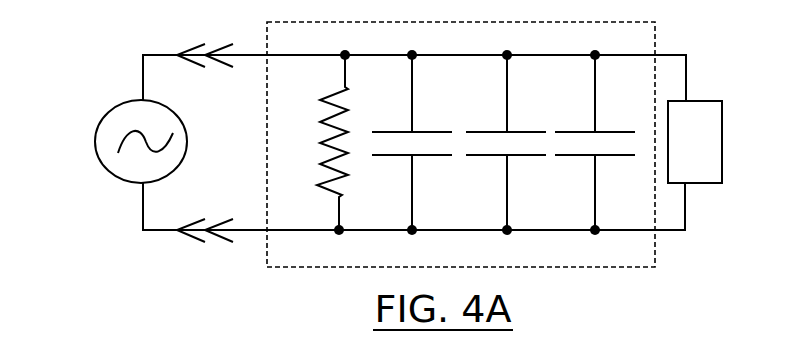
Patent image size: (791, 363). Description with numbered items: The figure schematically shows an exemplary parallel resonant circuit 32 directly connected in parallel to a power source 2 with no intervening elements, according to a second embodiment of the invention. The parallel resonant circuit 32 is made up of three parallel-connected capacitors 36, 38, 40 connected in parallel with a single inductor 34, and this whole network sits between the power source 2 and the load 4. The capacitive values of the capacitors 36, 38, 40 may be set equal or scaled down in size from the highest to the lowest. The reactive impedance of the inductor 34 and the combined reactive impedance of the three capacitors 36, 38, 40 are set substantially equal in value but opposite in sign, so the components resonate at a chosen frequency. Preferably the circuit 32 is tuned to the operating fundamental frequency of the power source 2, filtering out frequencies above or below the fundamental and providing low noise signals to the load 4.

The power source 2 is at (95, 135).
The load 4 is at (707, 120).
The parallel resonant circuit 32 is at (270, 255).
The inductor 34 is at (335, 103).
The capacitor 36 is at (415, 149).
The capacitor 38 is at (508, 149).
The capacitor 40 is at (617, 149).